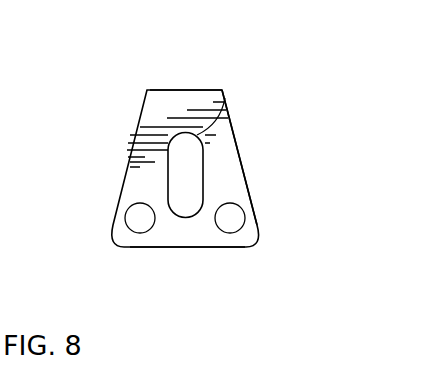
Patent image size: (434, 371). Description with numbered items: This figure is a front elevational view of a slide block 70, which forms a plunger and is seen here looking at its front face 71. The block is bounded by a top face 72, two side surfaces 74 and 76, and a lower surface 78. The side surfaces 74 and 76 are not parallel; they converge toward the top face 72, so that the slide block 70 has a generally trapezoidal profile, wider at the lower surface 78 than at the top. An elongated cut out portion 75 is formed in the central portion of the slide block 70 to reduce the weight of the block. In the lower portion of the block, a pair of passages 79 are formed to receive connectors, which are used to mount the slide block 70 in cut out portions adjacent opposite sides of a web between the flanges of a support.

The slide block 70 is at (131, 127).
The front face 71 is at (222, 175).
The top face 72 is at (170, 90).
The side surface 74 is at (129, 158).
The elongated cut out portion 75 is at (225, 98).
The side surface 76 is at (236, 138).
The lower surface 78 is at (182, 248).
The passages 79 is at (141, 220).